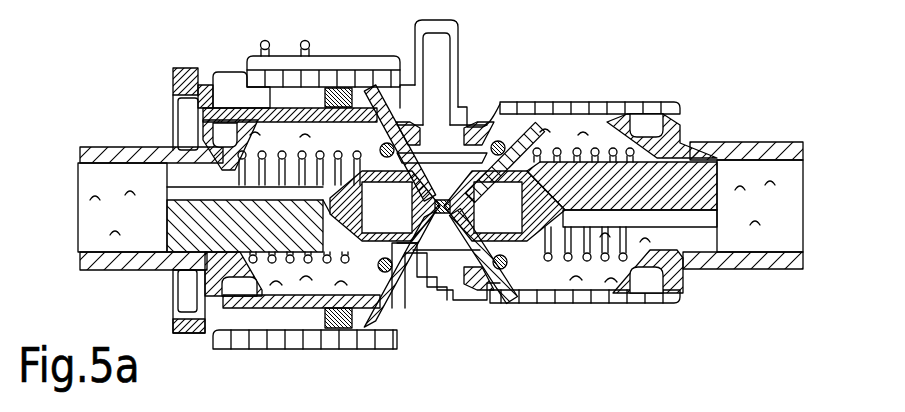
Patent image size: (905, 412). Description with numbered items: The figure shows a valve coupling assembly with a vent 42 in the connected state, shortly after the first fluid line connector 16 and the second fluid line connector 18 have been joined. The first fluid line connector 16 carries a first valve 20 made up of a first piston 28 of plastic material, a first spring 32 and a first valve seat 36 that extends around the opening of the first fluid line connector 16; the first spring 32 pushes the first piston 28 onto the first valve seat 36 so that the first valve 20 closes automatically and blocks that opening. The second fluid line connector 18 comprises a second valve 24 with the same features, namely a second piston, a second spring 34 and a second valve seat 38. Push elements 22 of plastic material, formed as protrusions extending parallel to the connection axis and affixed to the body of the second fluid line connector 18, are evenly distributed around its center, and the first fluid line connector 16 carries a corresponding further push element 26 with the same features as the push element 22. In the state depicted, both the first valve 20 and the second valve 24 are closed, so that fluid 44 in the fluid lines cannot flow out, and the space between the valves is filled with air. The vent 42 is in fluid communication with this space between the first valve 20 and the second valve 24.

The first fluid line connector 16 is at (596, 300).
The second fluid line connector 18 is at (175, 262).
The first valve 20 is at (550, 147).
The push element 22 is at (446, 237).
The second valve 24 is at (240, 248).
The further push element 26 is at (433, 160).
The first piston 28 is at (677, 177).
The first spring 32 is at (545, 233).
The second spring 34 is at (292, 262).
The first valve seat 36 is at (500, 270).
The second valve seat 38 is at (395, 285).
The vent 42 is at (460, 48).
The fluid 44 is at (780, 223).